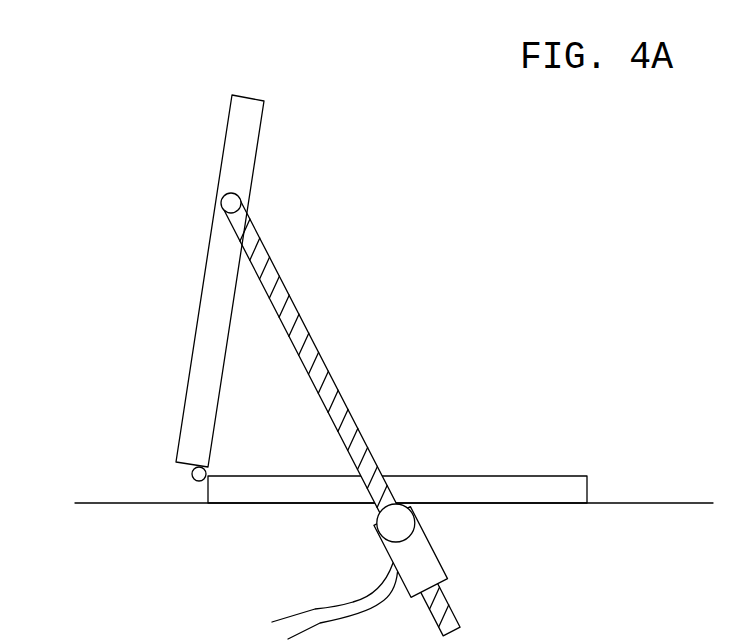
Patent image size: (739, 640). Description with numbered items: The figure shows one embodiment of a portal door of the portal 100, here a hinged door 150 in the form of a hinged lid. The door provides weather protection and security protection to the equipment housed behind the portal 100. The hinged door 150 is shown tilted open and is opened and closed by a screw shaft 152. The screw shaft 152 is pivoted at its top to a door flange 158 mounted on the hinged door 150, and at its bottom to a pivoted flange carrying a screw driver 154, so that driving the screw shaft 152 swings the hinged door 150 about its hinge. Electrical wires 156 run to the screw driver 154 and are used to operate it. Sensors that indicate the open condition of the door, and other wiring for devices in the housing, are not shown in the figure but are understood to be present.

The portal 100 is at (548, 338).
The hinged door 150 is at (369, 244).
The screw shaft 152 is at (350, 413).
The screw driver 154 is at (418, 554).
The electrical wires 156 is at (353, 603).
The door flange 158 is at (240, 167).